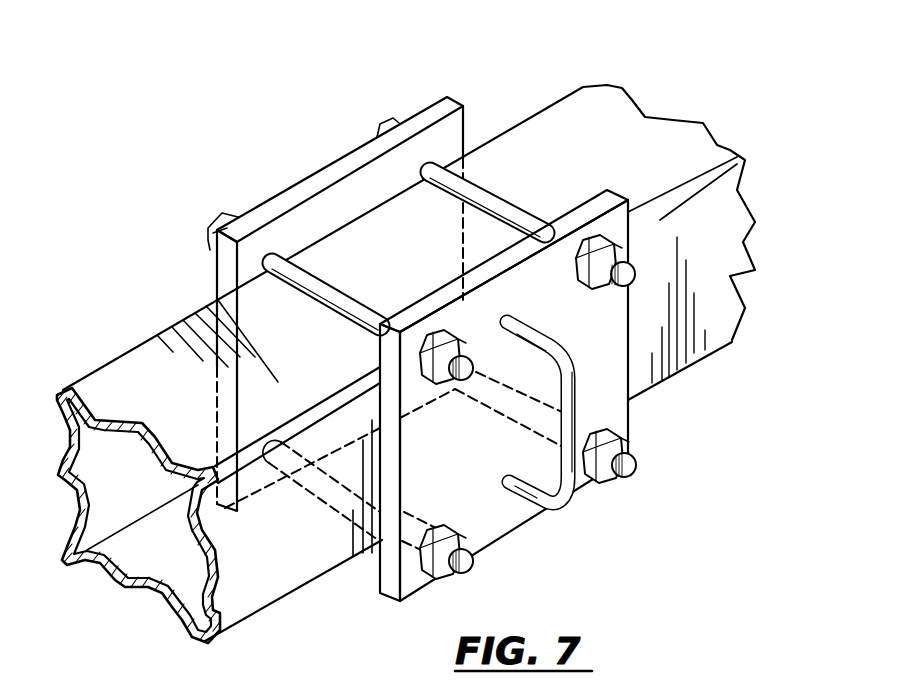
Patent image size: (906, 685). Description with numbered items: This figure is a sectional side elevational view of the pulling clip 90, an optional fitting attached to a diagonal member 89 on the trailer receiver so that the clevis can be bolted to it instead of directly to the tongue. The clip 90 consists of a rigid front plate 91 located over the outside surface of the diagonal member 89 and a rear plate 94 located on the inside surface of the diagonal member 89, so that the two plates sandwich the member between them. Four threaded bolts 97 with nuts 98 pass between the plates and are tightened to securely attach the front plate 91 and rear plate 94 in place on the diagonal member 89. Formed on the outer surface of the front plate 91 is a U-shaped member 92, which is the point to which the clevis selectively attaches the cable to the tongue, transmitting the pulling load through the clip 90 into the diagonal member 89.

The diagonal member 89 is at (620, 116).
The clip 90 is at (486, 80).
The front plate 91 is at (612, 352).
The U-shaped member 92 is at (577, 398).
The rear plate 94 is at (262, 196).
The threaded bolts 97 is at (380, 128).
The nuts 98 is at (420, 358).